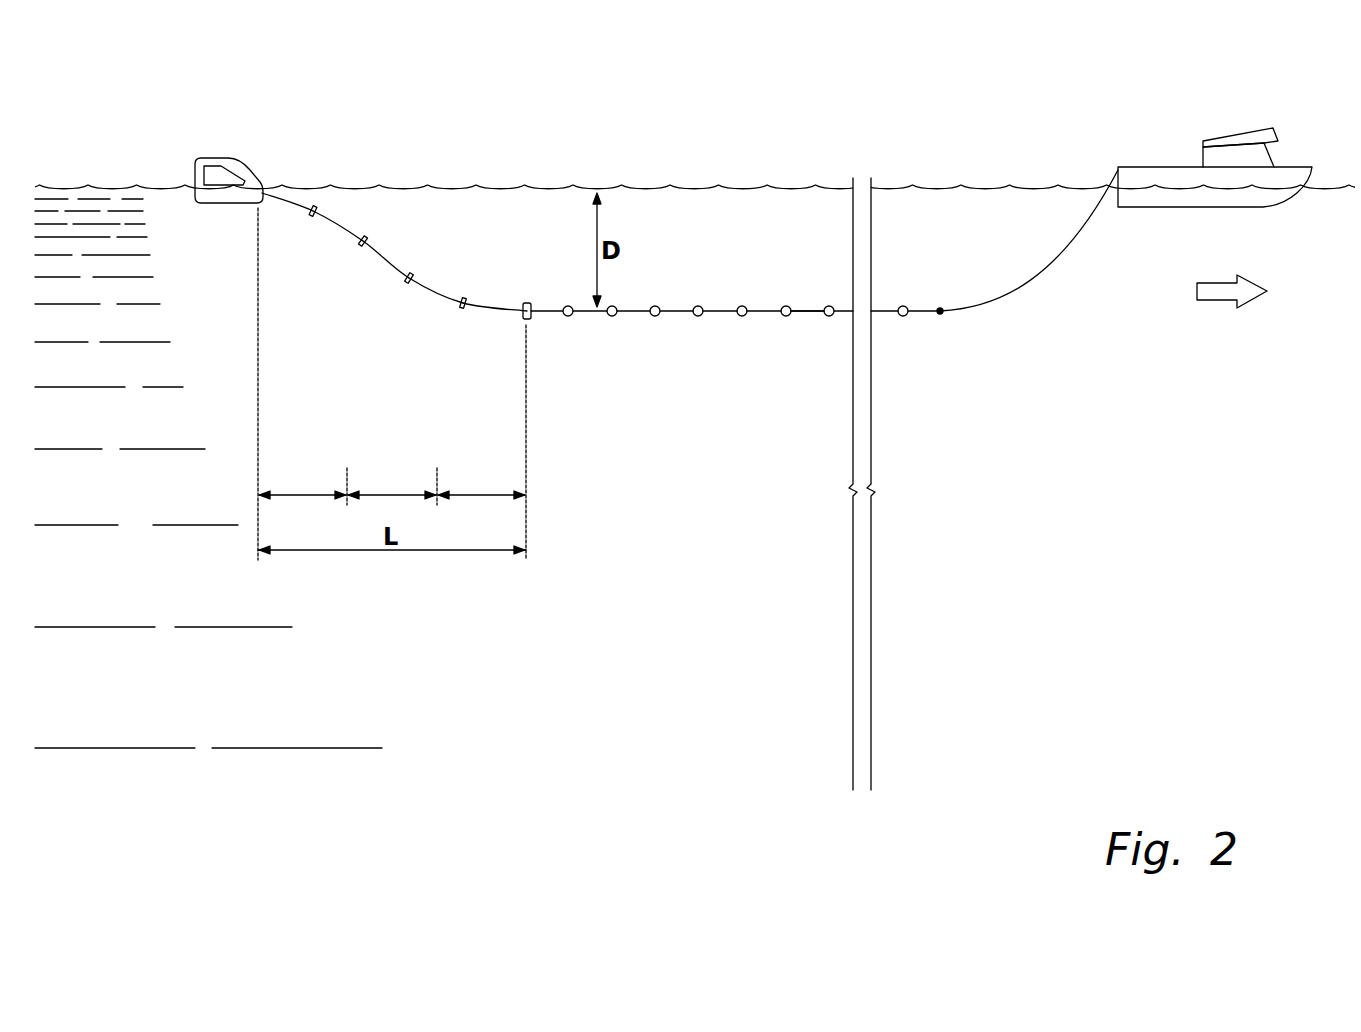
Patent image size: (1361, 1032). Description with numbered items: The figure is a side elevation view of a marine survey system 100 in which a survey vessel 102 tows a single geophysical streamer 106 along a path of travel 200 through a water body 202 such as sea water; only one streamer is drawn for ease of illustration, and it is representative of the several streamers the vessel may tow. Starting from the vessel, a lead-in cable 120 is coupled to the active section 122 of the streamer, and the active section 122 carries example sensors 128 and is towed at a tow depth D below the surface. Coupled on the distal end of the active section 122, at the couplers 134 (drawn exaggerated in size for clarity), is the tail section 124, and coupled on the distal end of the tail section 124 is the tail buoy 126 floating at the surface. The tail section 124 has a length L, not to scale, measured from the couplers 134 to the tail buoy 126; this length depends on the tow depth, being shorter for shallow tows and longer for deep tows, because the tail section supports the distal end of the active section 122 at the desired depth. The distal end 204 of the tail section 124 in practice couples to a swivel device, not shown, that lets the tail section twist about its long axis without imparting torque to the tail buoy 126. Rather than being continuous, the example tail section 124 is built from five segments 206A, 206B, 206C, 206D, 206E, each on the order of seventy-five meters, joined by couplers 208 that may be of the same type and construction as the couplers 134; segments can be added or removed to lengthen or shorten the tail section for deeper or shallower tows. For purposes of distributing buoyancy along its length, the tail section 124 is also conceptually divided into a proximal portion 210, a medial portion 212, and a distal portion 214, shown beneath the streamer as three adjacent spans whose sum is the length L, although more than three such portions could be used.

The marine survey system 100 is at (1008, 92).
The survey vessel 102 is at (1240, 140).
The geophysical streamer 106 is at (735, 266).
The lead-in cable 120 is at (1040, 273).
The active section 122 is at (810, 311).
The tail section 124 is at (356, 281).
The tail buoy 126 is at (213, 158).
The sensors 128 is at (743, 306).
The couplers 134 is at (528, 303).
The path of travel 200 is at (1213, 300).
The water body 202 is at (1042, 418).
The distal end 204 is at (304, 159).
The segment 206A is at (500, 309).
The segment 206B is at (435, 291).
The segment 206C is at (382, 256).
The segment 206D is at (333, 221).
The segment 206E is at (287, 203).
The couplers 208 is at (466, 286).
The proximal portion 210 is at (473, 495).
The medial portion 212 is at (387, 495).
The distal portion 214 is at (298, 495).